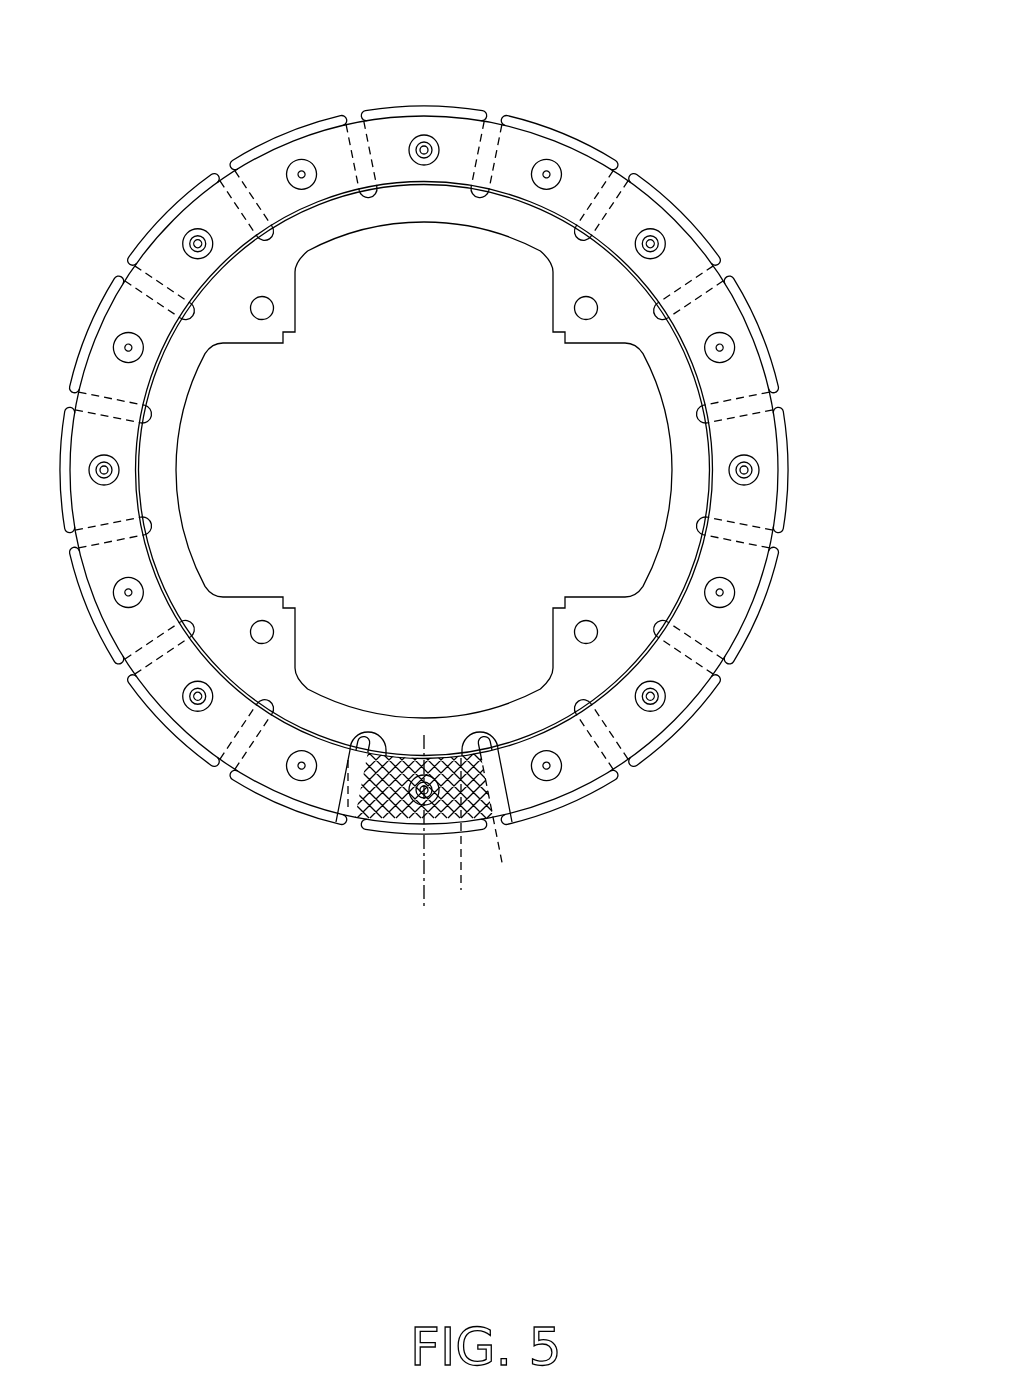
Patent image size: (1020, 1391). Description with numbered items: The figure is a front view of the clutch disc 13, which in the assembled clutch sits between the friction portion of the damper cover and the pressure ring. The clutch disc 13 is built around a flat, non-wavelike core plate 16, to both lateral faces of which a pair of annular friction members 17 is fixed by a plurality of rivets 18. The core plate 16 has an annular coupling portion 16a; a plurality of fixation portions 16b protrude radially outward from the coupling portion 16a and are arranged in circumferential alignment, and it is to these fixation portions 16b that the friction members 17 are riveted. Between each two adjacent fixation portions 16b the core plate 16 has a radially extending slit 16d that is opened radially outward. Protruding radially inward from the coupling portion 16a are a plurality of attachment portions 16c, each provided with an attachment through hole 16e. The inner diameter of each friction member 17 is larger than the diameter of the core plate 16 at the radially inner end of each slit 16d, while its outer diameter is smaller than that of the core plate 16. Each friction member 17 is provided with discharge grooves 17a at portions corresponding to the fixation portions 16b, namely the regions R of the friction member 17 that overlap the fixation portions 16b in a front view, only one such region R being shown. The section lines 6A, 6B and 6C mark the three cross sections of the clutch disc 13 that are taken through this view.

The clutch disc 13 is at (612, 100).
The core plate 16 is at (648, 415).
The coupling portion 16a is at (412, 215).
The fixation portions 16b is at (385, 108).
The attachment portions 16c is at (250, 346).
The slits 16d is at (338, 148).
The attachment through hole 16e is at (268, 310).
The friction members 17 is at (704, 250).
The discharge grooves 17a is at (506, 756).
The rivets 18 is at (428, 138).
The region R is at (395, 817).
The cross section 6A is at (424, 910).
The cross section 6B is at (461, 890).
The cross section 6C is at (502, 864).